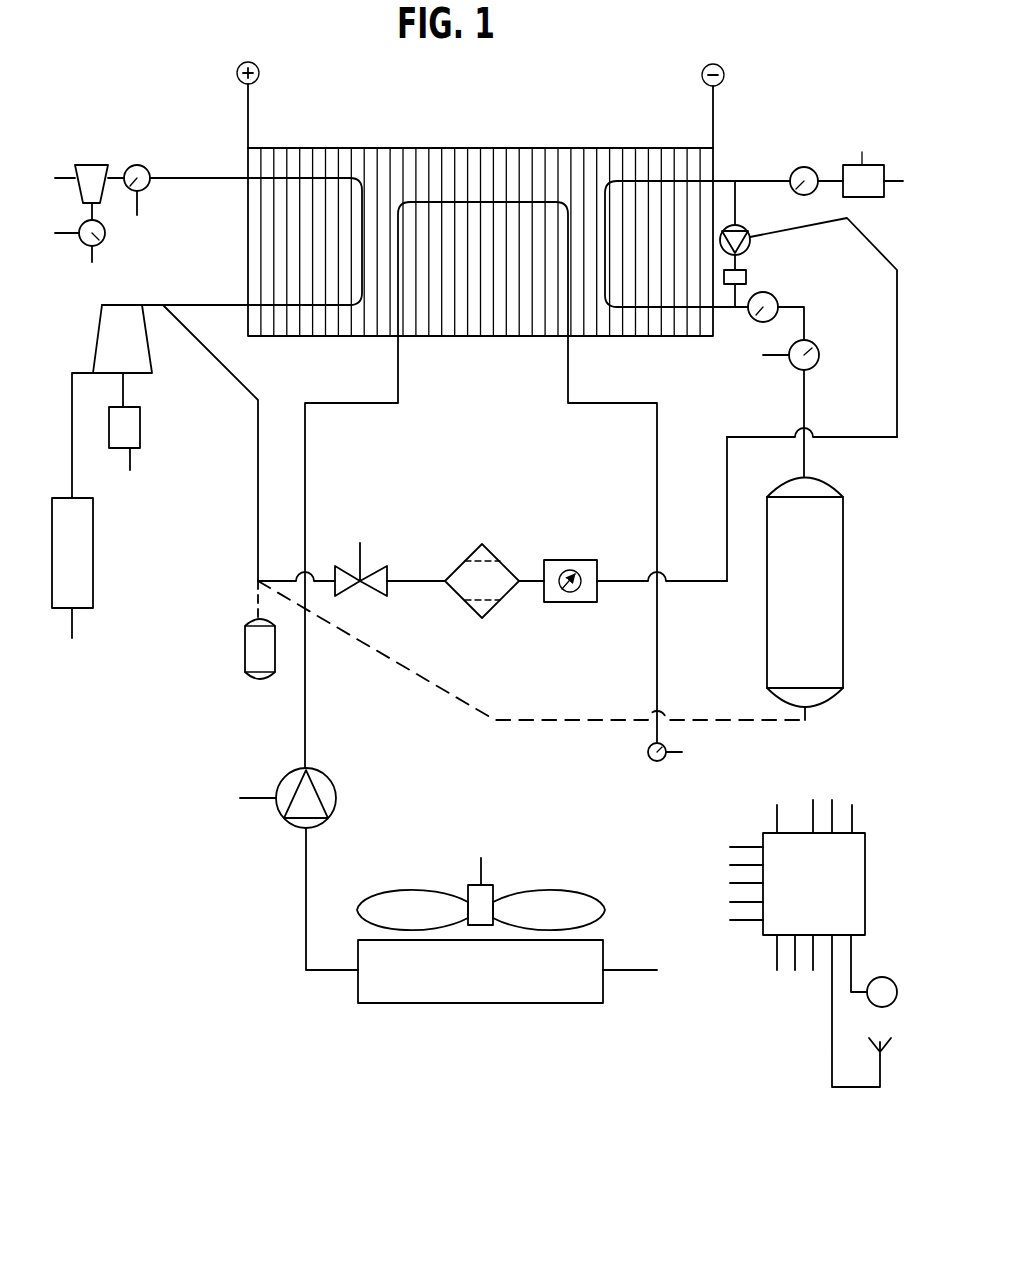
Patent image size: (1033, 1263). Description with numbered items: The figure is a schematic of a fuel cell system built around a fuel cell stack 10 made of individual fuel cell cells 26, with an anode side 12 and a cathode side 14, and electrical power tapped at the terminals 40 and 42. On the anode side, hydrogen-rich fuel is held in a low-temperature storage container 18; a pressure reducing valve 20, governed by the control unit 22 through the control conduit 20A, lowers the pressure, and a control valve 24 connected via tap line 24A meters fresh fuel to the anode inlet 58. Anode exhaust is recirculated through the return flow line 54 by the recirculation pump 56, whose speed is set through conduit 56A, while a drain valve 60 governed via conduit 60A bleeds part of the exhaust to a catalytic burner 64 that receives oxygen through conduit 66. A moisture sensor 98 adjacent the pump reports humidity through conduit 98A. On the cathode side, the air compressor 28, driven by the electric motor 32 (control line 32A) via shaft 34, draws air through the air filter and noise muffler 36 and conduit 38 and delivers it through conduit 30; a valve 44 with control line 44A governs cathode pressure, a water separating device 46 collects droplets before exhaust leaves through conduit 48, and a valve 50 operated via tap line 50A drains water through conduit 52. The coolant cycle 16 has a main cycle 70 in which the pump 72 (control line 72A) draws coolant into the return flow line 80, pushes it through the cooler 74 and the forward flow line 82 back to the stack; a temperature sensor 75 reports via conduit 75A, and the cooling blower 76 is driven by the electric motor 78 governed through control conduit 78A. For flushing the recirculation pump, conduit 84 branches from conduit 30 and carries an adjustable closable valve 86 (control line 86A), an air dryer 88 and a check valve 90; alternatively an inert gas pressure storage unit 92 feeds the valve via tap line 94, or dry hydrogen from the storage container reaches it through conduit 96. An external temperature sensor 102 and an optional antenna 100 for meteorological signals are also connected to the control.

The fuel cell stack 10 is at (587, 144).
The anode side 12 is at (705, 339).
The cathode side 14 is at (239, 322).
The coolant cycle 16 is at (572, 378).
The low-temperature storage container 18 is at (836, 582).
The valve 20 is at (819, 354).
The control conduit 20A is at (773, 356).
The control unit 22 is at (829, 898).
The control valve 24 is at (770, 323).
The tap line 24A is at (774, 293).
The fuel cell cells 26 is at (270, 156).
The air compressor 28 is at (103, 316).
The conduit 30 is at (226, 300).
The electric motor 32 is at (130, 430).
The control line 32A is at (132, 470).
The shaft 34 is at (125, 389).
The air filter and noise muffler 36 is at (80, 548).
The conduit 38 is at (73, 470).
The terminal 40 is at (259, 68).
The terminal 42 is at (702, 74).
The valve 44 is at (141, 167).
The control line 44A is at (139, 208).
The water separating device 46 is at (94, 165).
The conduit 48 is at (58, 176).
The valve 50 is at (106, 236).
The tap line 50A is at (62, 234).
The conduit 52 is at (94, 262).
The return flow line 54 is at (741, 193).
The recirculation pump 56 is at (742, 227).
The conduit 56A is at (750, 241).
The anode inlet 58 is at (720, 310).
The drain valve 60 is at (795, 169).
The conduit 60A is at (805, 166).
The burner 64 is at (871, 183).
The conduit 66 is at (862, 160).
The main cycle 70 is at (302, 711).
The pump 72 is at (292, 816).
The control line 72A is at (256, 774).
The cooler 74 is at (512, 988).
The temperature sensor 75 is at (648, 752).
The conduit 75A is at (682, 752).
The cooling blower 76 is at (406, 906).
The electric motor 78 is at (486, 893).
The control conduit 78A is at (477, 864).
The return flow line 80 is at (400, 371).
The forward flow line 82 is at (566, 371).
The conduit 84 is at (258, 511).
The adjustable closable valve 86 is at (383, 598).
The control line 86A is at (362, 556).
The air dryer 88 is at (498, 604).
The check valve 90 is at (572, 604).
The pressure storage unit 92 is at (250, 650).
The tap line 94 is at (257, 600).
The conduit 96 is at (428, 681).
The moisture sensor 98 is at (707, 330).
The conduit 98A is at (748, 277).
The antenna 100 is at (860, 1087).
The external temperature sensor 102 is at (876, 978).